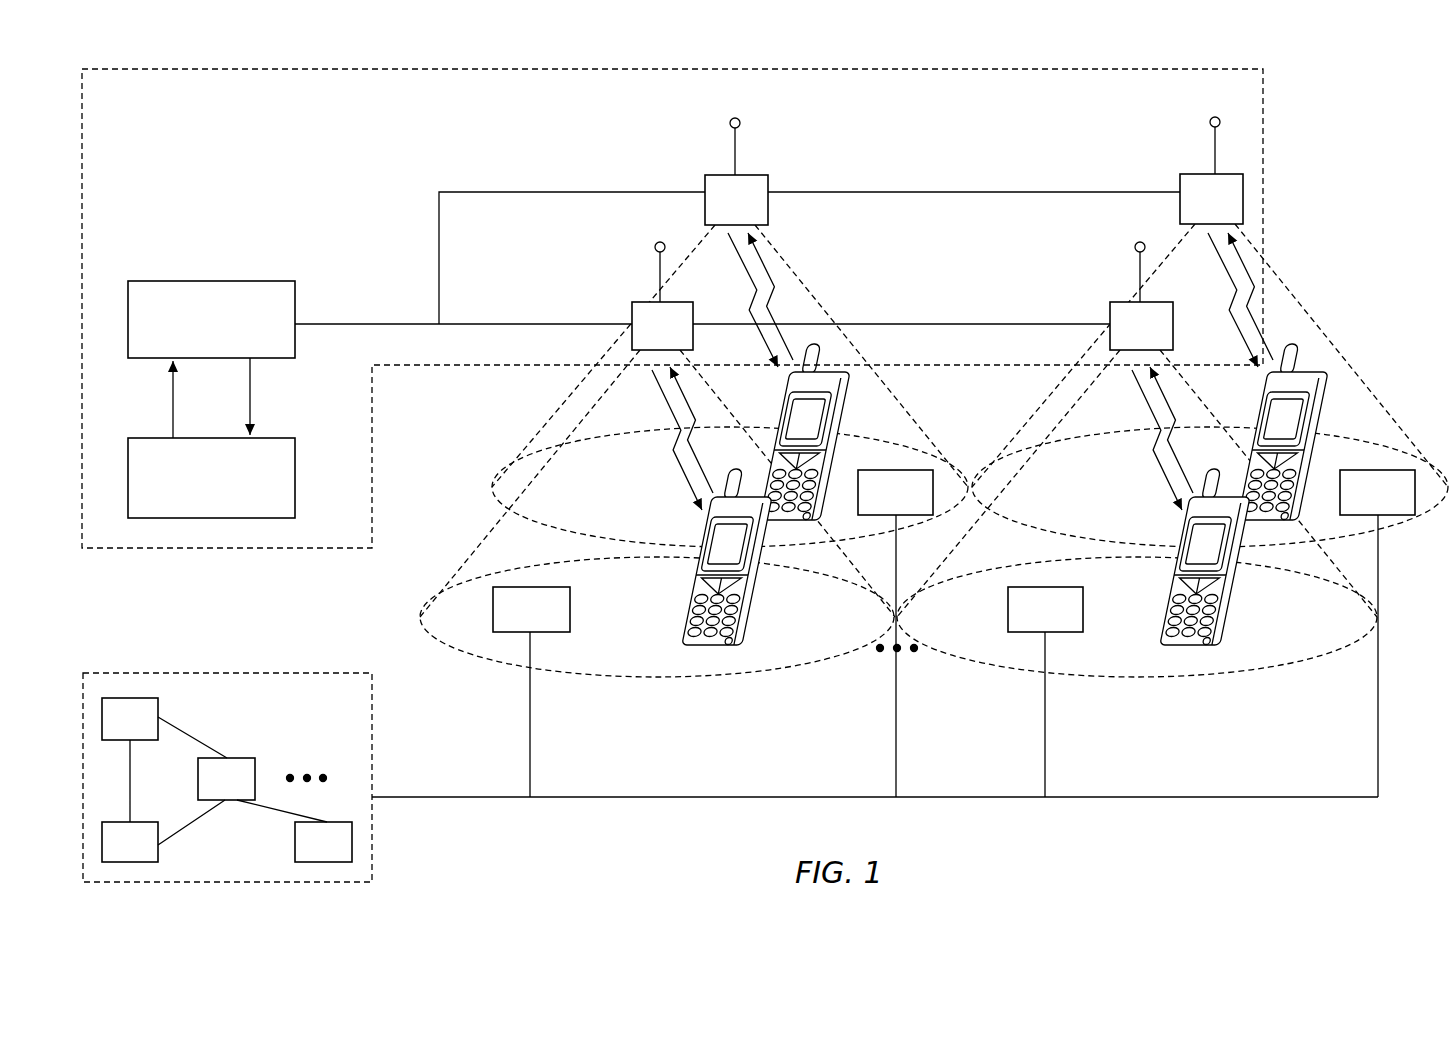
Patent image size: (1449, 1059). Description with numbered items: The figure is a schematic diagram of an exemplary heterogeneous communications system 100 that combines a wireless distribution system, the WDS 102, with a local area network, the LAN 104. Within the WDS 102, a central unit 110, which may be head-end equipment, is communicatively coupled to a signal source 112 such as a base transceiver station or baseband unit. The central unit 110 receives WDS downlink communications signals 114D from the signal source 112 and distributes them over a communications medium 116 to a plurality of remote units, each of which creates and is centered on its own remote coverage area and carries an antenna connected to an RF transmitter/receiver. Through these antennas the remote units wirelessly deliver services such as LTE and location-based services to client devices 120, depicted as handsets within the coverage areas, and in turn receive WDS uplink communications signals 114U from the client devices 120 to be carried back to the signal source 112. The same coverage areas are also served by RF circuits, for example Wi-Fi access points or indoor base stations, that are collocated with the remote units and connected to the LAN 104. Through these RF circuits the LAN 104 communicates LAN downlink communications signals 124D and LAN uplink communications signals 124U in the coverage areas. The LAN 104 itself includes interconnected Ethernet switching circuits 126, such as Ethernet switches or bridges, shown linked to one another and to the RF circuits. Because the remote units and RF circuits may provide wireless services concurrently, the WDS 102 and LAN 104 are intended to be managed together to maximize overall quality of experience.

The heterogeneous communications system 100 is at (1397, 130).
The WDS 102 is at (148, 126).
The LAN 104 is at (343, 720).
The central unit 110 is at (195, 332).
The signal source 112 is at (195, 490).
The WDS downlink communications signals 114D is at (732, 262).
The WDS uplink communications signals 114U is at (763, 265).
The communications medium 116 is at (460, 324).
The client devices 120 is at (855, 410).
The LAN uplink communications signals 124U is at (473, 793).
The LAN downlink communications signals 124D is at (442, 803).
The Ethernet switching circuits 126 is at (114, 734).